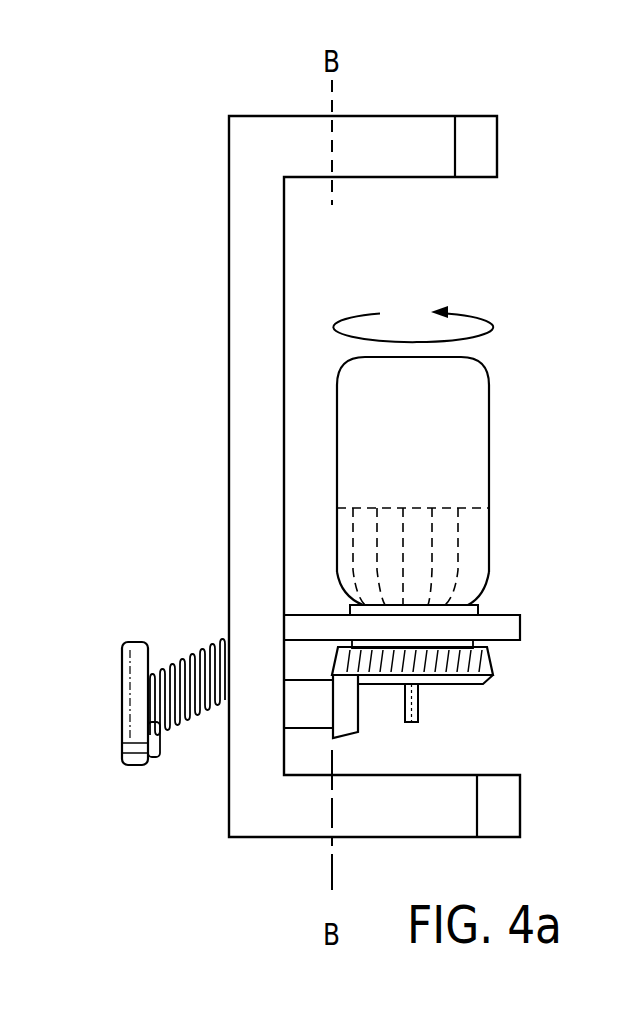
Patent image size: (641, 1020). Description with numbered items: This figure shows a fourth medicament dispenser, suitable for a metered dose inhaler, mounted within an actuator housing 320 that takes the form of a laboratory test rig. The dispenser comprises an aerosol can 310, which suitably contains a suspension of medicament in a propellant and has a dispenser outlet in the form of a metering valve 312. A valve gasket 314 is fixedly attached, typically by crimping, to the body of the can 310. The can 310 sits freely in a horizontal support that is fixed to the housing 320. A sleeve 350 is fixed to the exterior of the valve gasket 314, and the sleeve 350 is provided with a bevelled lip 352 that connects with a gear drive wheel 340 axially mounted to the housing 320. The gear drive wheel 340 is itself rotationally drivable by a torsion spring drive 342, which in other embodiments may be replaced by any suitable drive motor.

The aerosol can 310 is at (490, 430).
The metering valve 312 is at (417, 706).
The valve gasket 314 is at (492, 590).
The actuator housing 320 is at (243, 294).
The gear drive wheel 340 is at (350, 717).
The torsion spring drive 342 is at (200, 672).
The sleeve 350 is at (490, 659).
The bevelled lip 352 is at (487, 681).